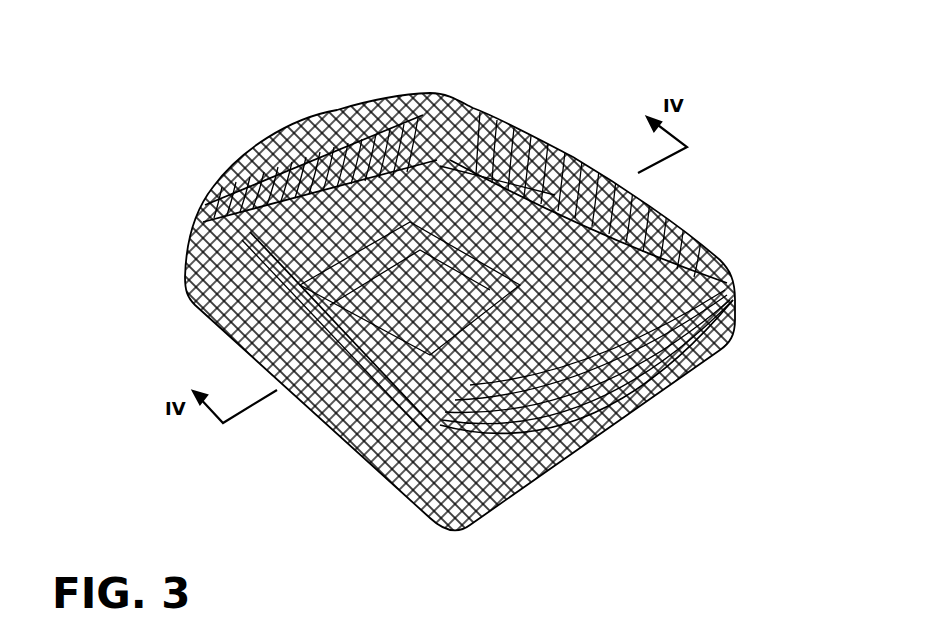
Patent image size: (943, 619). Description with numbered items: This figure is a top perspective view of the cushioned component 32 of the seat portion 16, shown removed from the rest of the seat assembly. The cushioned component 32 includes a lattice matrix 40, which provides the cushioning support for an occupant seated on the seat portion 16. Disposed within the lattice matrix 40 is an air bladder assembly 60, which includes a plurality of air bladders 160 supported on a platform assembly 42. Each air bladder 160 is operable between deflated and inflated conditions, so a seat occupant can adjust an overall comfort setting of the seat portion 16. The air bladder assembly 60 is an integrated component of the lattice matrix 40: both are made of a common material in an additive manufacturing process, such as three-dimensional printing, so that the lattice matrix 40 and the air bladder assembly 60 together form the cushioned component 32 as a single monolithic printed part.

The seat portion 16 is at (776, 322).
The cushioned component 32 is at (153, 211).
The lattice matrix 40 is at (238, 300).
The platform assembly 42 is at (585, 415).
The air bladder assembly 60 is at (327, 363).
The air bladder 160 is at (428, 98).